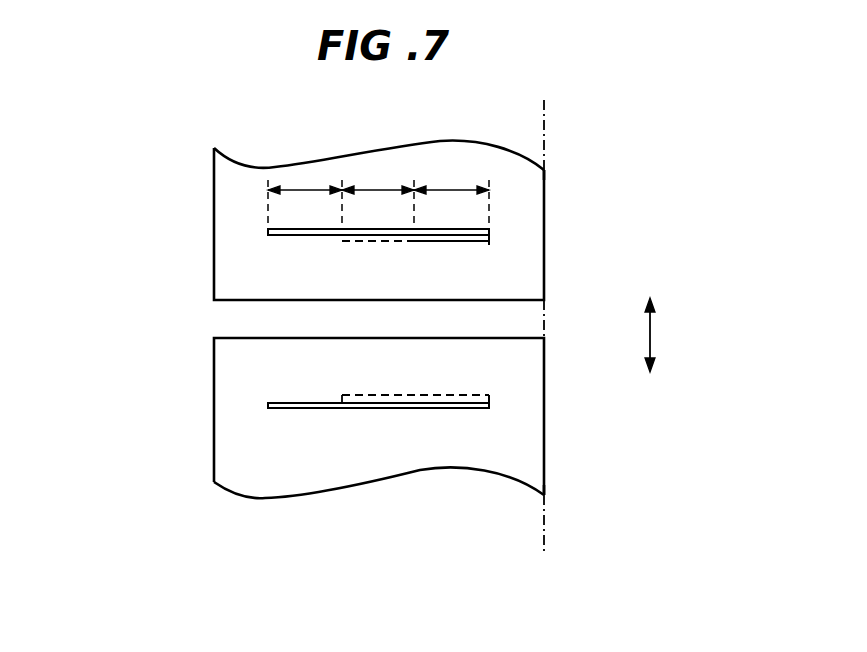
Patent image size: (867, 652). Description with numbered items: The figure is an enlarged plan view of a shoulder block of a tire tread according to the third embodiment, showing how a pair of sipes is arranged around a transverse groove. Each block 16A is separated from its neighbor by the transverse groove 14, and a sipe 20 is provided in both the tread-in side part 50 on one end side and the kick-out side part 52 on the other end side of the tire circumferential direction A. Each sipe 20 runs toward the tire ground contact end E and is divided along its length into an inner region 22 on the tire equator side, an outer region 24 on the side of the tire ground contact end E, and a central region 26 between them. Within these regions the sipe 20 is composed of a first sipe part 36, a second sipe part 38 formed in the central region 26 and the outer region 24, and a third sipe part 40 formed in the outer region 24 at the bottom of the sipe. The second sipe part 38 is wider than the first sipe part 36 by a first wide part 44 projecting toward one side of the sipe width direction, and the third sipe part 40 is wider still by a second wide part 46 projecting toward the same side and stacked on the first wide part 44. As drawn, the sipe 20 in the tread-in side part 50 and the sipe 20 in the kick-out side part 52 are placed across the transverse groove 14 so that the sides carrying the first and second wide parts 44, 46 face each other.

The transverse groove 14 is at (230, 318).
The block 16A is at (545, 182).
The sipe 20 is at (268, 234).
The inner region 22 is at (305, 190).
The outer region 24 is at (455, 190).
The central region 26 is at (380, 190).
The first sipe part 36 is at (298, 236).
The second sipe part 38 is at (370, 244).
The third sipe part 40 is at (445, 244).
The first wide part 44 is at (398, 244).
The second wide part 46 is at (478, 250).
The tread-in side part 50 is at (535, 283).
The kick-out side part 52 is at (533, 392).
The tire circumferential direction A is at (661, 335).
The tire ground contact end E is at (544, 538).